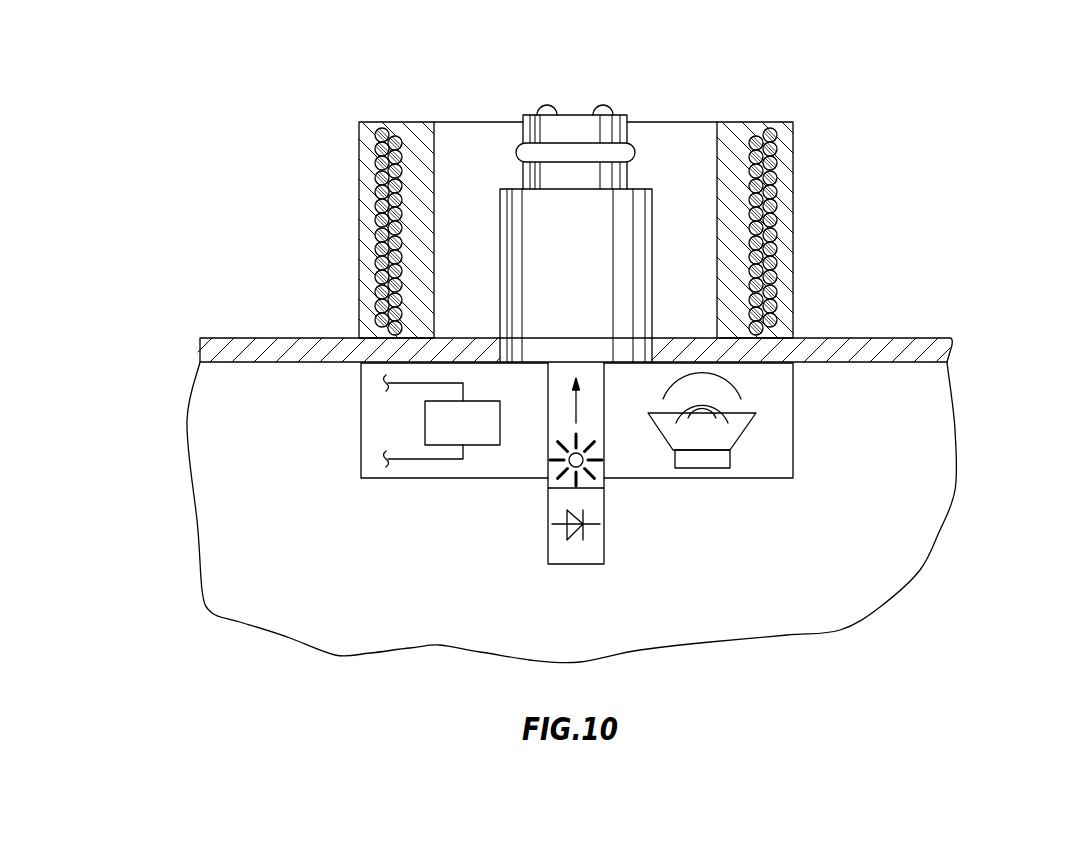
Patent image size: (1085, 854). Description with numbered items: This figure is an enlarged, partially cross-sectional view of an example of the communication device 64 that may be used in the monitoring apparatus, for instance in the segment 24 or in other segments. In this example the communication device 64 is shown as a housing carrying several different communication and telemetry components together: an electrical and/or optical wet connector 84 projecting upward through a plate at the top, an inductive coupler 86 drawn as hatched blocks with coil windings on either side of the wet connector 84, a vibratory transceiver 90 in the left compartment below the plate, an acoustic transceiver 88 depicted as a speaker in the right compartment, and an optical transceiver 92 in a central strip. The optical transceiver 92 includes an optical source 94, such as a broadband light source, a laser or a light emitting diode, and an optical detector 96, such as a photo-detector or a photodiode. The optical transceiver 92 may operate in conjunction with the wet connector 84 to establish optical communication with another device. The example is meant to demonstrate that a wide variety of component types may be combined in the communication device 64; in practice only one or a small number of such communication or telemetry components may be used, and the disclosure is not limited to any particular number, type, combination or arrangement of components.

The segment 24 is at (957, 108).
The communication device 64 is at (408, 491).
The wet connector 84 is at (580, 115).
The inductive coupler 86 is at (357, 153).
The acoustic transceiver 88 is at (793, 435).
The vibratory transceiver 90 is at (361, 387).
The optical transceiver 92 is at (607, 502).
The optical source 94 is at (548, 450).
The optical detector 96 is at (548, 511).